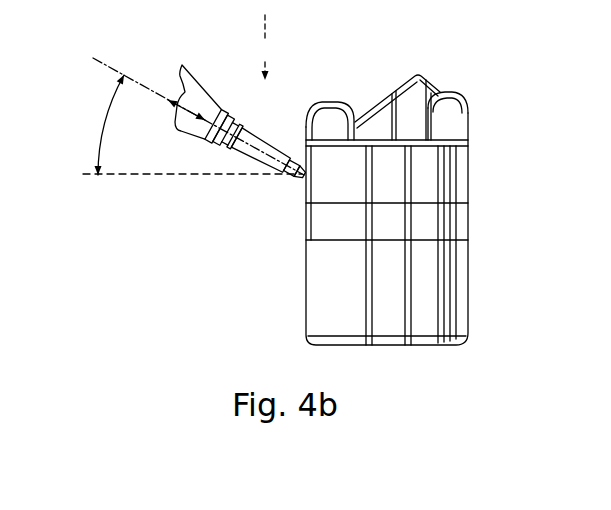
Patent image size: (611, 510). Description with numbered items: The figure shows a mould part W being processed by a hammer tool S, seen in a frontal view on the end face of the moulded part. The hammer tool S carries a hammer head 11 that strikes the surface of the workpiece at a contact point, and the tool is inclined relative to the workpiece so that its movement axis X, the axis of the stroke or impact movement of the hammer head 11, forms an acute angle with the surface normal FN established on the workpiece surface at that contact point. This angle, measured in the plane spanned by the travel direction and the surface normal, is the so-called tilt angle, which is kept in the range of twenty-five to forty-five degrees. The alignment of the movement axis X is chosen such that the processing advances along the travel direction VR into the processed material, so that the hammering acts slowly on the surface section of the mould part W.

The hammer head 11 is at (303, 181).
The hammer tool S is at (200, 82).
The workpiece W is at (465, 260).
The movement axis X is at (116, 74).
The surface normal FN is at (168, 174).
The travel direction VR is at (264, 47).